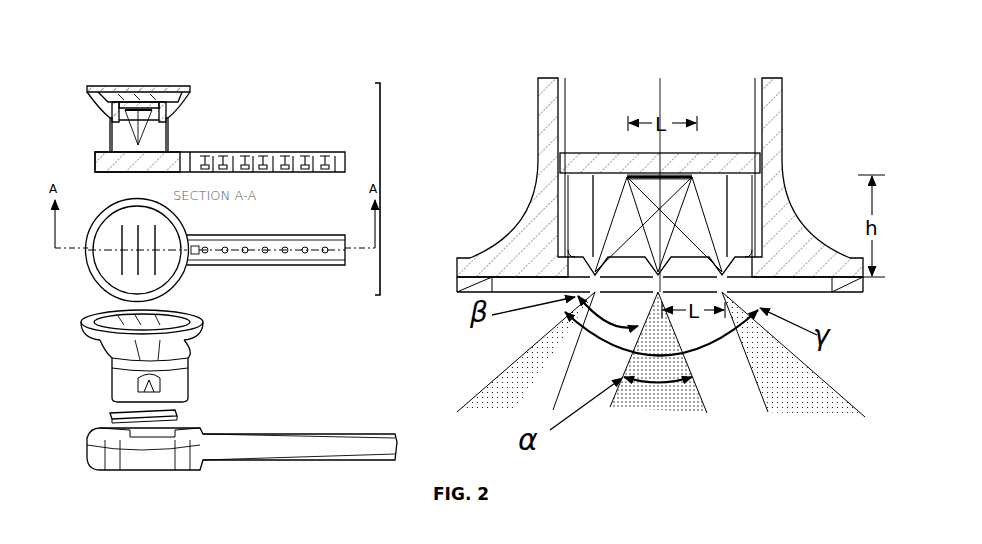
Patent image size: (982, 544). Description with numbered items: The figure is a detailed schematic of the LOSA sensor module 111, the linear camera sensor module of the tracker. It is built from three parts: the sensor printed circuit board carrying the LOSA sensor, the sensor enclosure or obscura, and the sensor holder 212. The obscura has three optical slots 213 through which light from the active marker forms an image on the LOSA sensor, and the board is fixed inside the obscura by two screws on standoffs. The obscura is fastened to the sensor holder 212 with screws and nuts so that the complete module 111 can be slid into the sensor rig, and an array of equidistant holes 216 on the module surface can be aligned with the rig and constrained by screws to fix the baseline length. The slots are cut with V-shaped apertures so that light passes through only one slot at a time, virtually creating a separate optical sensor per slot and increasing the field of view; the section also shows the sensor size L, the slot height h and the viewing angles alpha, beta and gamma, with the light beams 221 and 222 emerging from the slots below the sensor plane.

The LOSA sensor module 111 is at (380, 190).
The sensor holder 212 is at (314, 421).
The optical slots 213 is at (162, 240).
The equidistant holes 216 is at (322, 174).
The central beam 221 is at (682, 403).
The side beam 222 is at (784, 379).